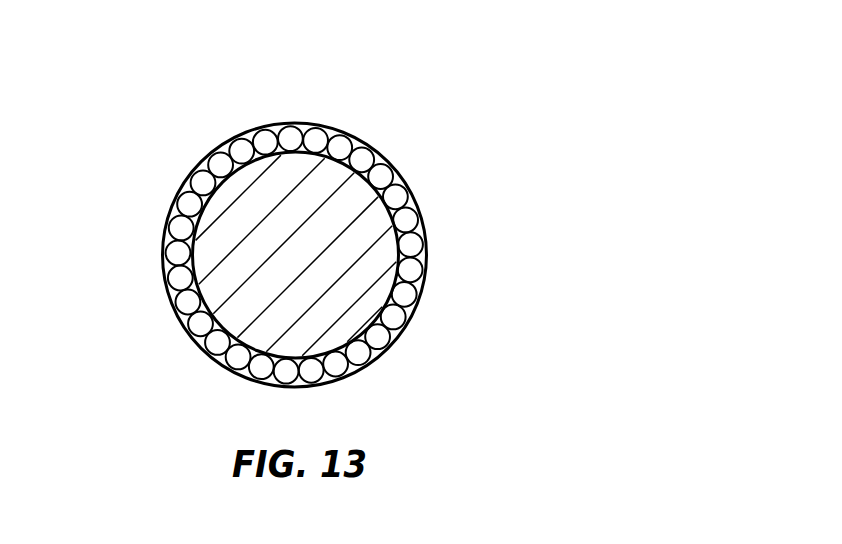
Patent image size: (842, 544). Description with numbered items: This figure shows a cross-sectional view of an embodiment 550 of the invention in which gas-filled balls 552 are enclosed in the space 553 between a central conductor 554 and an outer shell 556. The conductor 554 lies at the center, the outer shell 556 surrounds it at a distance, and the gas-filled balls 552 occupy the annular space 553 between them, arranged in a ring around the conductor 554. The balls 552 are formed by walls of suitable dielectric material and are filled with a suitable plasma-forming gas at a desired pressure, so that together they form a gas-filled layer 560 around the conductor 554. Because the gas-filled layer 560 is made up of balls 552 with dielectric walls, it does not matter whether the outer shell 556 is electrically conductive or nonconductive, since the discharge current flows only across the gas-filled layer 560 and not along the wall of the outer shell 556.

The embodiment 550 is at (157, 73).
The gas-filled balls 552 is at (402, 222).
The space 553 is at (362, 138).
The conductor 554 is at (240, 316).
The outer shell 556 is at (424, 285).
The gas-filled layer 560 is at (176, 253).